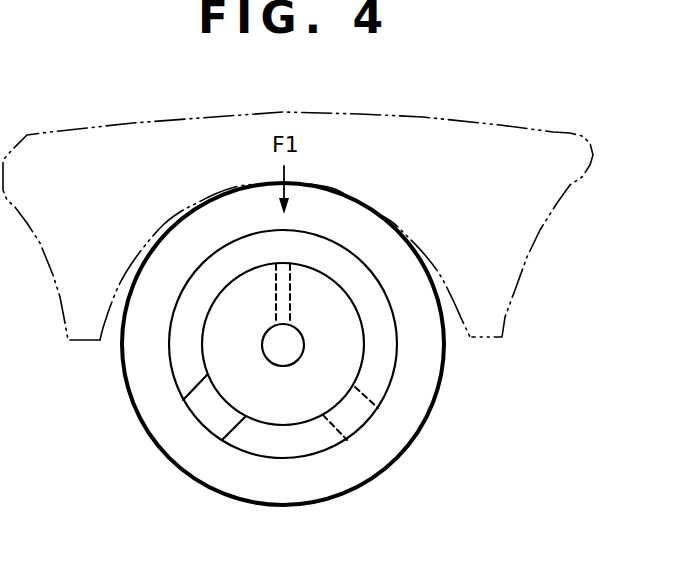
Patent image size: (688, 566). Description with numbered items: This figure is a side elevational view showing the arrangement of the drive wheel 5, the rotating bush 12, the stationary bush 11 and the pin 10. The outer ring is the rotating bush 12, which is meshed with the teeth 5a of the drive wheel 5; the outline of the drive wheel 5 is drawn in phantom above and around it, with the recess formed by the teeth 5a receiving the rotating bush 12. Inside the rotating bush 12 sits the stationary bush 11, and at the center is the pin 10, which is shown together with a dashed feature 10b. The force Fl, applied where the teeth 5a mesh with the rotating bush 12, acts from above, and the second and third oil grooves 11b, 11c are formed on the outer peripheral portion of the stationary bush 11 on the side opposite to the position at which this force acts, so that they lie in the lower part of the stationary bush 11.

The drive wheel 5 is at (491, 158).
The teeth of the drive wheel 5a is at (493, 307).
The pin 10 is at (347, 355).
The slot of inner rotary member 10b is at (274, 295).
The stationary bush 11 is at (290, 447).
The second oil groove 11b is at (360, 413).
The third oil groove 11c is at (208, 418).
The rotating bush 12 is at (368, 468).